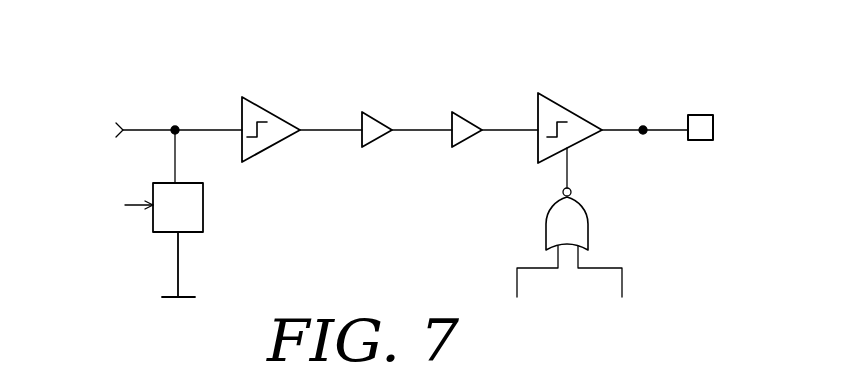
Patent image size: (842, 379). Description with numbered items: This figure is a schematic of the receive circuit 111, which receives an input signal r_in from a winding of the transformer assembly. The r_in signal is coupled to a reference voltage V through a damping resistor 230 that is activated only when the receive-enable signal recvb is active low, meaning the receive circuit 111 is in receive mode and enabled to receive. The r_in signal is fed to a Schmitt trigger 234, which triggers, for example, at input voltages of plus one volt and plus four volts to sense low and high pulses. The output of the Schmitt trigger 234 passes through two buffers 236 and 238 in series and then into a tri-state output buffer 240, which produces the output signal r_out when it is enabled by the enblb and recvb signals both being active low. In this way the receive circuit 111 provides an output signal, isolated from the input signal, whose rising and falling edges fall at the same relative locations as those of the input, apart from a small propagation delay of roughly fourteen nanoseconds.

The receive circuit 111 is at (385, 58).
The damping resistor 230 is at (204, 207).
The Schmitt trigger 234 is at (279, 112).
The buffer 236 is at (382, 117).
The buffer 238 is at (465, 117).
The tri-state output buffer 240 is at (582, 116).